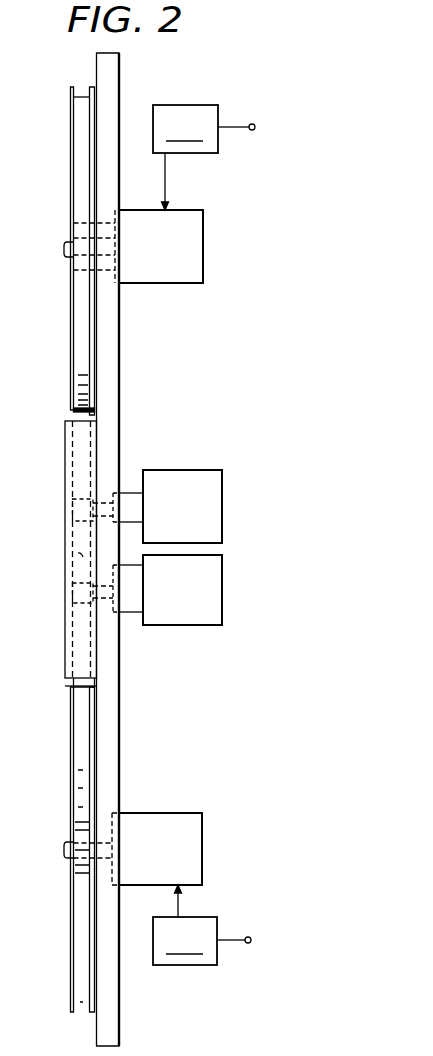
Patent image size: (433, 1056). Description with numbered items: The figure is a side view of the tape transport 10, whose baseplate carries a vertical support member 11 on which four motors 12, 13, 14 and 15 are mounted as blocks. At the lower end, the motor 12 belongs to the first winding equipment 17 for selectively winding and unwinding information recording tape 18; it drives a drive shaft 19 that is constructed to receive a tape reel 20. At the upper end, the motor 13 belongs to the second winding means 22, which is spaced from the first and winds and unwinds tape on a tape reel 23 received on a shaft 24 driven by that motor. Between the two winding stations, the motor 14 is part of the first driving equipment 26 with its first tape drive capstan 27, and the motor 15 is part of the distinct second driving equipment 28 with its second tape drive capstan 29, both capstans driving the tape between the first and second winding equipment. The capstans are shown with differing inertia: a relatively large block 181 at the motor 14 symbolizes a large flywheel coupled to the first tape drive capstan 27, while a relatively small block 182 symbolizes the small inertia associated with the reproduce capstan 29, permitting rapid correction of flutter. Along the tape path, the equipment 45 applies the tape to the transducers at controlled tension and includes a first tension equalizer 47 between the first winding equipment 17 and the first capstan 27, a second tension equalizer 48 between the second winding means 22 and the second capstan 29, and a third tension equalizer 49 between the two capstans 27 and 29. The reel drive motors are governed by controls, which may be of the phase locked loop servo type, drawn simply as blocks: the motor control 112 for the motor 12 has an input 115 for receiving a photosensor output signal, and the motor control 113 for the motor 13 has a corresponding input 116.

The tape transport 10 is at (127, 993).
The support bar 11 is at (117, 81).
The motor 12 is at (192, 822).
The motor 13 is at (195, 216).
The motor 14 is at (222, 575).
The motor 15 is at (222, 492).
The first winding equipment 17 is at (128, 802).
The information recording tape 18 is at (70, 752).
The drive shaft 19 is at (64, 843).
The tape reel 20 is at (70, 928).
The second winding means 22 is at (125, 295).
The tape reel 23 is at (70, 166).
The shaft 24 is at (66, 254).
The first driving equipment 26 is at (126, 632).
The first tape drive capstan 27 is at (73, 605).
The second driving equipment 28 is at (125, 480).
The second tape drive capstan 29 is at (75, 522).
The equipment for applying recording tape at controlled tension 45 is at (60, 672).
The first tension equalizer 47 is at (75, 645).
The second tension equalizer 48 is at (63, 448).
The third tension equalizer 49 is at (78, 556).
The motor control 112 is at (185, 925).
The motor control 113 is at (185, 157).
The input 115 is at (250, 937).
The input 116 is at (254, 124).
The block symbolizing a relatively large flywheel 181 is at (133, 613).
The block symbolizing a small inertia 182 is at (135, 502).